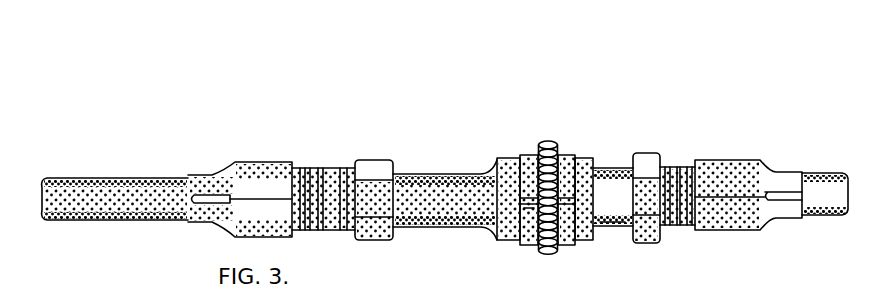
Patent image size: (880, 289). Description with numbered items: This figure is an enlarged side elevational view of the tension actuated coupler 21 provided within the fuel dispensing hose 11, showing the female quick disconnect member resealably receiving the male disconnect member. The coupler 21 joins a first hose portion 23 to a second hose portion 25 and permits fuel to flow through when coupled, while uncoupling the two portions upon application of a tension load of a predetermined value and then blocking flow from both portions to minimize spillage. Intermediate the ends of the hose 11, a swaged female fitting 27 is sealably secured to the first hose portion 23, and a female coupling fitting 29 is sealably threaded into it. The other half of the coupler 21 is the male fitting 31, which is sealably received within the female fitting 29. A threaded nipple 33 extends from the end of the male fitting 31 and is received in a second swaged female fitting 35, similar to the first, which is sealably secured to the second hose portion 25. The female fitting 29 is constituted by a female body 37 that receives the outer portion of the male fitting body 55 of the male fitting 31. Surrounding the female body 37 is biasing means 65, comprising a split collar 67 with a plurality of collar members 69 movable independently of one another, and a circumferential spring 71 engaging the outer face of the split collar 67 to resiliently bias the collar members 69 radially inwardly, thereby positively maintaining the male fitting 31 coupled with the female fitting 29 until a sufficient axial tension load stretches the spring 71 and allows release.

The fuel dispensing hose 11 is at (136, 152).
The tension actuated coupler 21 is at (562, 88).
The first hose portion 23 is at (80, 178).
The second hose portion 25 is at (815, 172).
The swaged female fitting 27 is at (249, 162).
The female coupling fitting 29 is at (502, 152).
The male fitting 31 is at (614, 162).
The threaded nipple 33 is at (677, 167).
The swaged female fitting 35 is at (725, 230).
The female body 37 is at (508, 205).
The male fitting body 55 is at (610, 224).
The biasing means 65 is at (527, 135).
The split collar 67 is at (530, 218).
The collar members 69 is at (562, 182).
The circumferential spring 71 is at (548, 256).